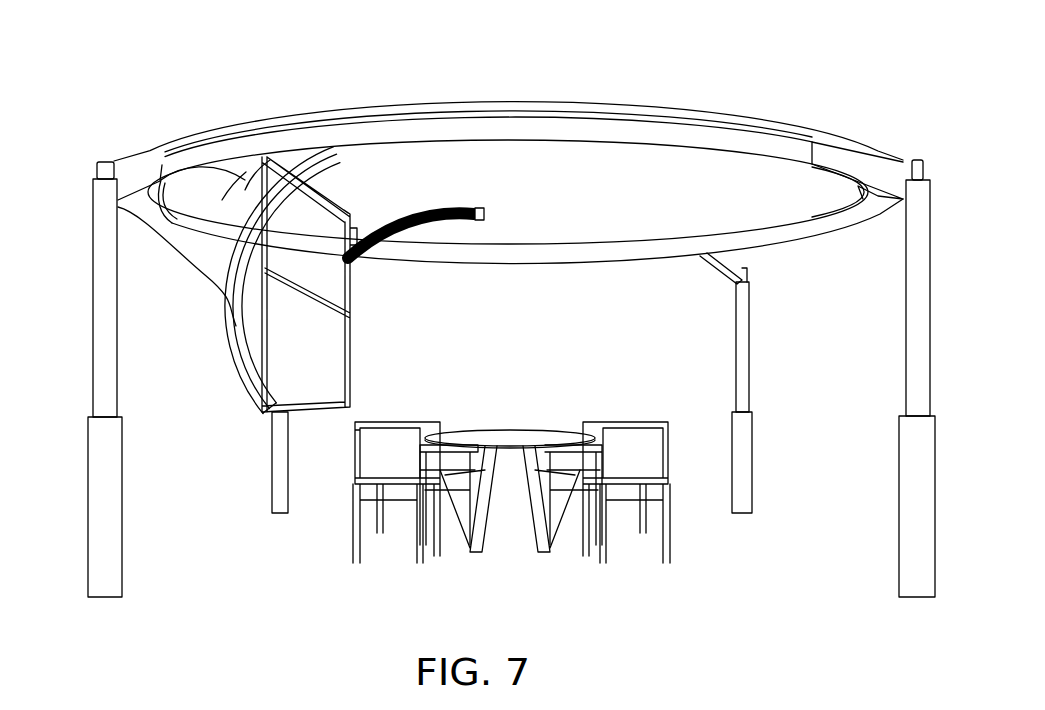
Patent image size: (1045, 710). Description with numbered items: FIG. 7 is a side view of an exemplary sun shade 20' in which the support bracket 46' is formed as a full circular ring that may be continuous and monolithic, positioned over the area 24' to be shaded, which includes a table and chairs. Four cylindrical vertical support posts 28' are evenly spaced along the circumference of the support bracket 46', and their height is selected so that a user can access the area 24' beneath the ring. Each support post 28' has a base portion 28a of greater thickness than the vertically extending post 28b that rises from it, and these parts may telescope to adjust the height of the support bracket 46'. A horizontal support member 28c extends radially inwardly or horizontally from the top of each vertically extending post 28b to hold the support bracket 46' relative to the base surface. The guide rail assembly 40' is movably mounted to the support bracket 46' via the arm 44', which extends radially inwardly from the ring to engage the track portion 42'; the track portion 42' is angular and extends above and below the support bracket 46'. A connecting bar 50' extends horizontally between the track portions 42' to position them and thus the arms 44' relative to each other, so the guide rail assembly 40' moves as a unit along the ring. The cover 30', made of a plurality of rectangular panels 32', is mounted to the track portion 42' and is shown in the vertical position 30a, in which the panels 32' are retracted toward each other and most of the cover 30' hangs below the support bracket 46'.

The sun shade 20' is at (466, 167).
The area to be shaded 24' is at (511, 514).
The vertical support post 28' is at (69, 375).
The base portion 28a is at (110, 537).
The vertically extending post 28b is at (107, 357).
The horizontal support member 28c is at (118, 168).
The cover 30' is at (193, 284).
The vertical position 30a is at (117, 208).
The rectangular panels 32' is at (211, 153).
The guide rail assembly 40' is at (416, 150).
The track portion 42' is at (185, 280).
The arm 44' is at (508, 140).
The support bracket 46' is at (508, 136).
The connecting bar 50' is at (182, 168).